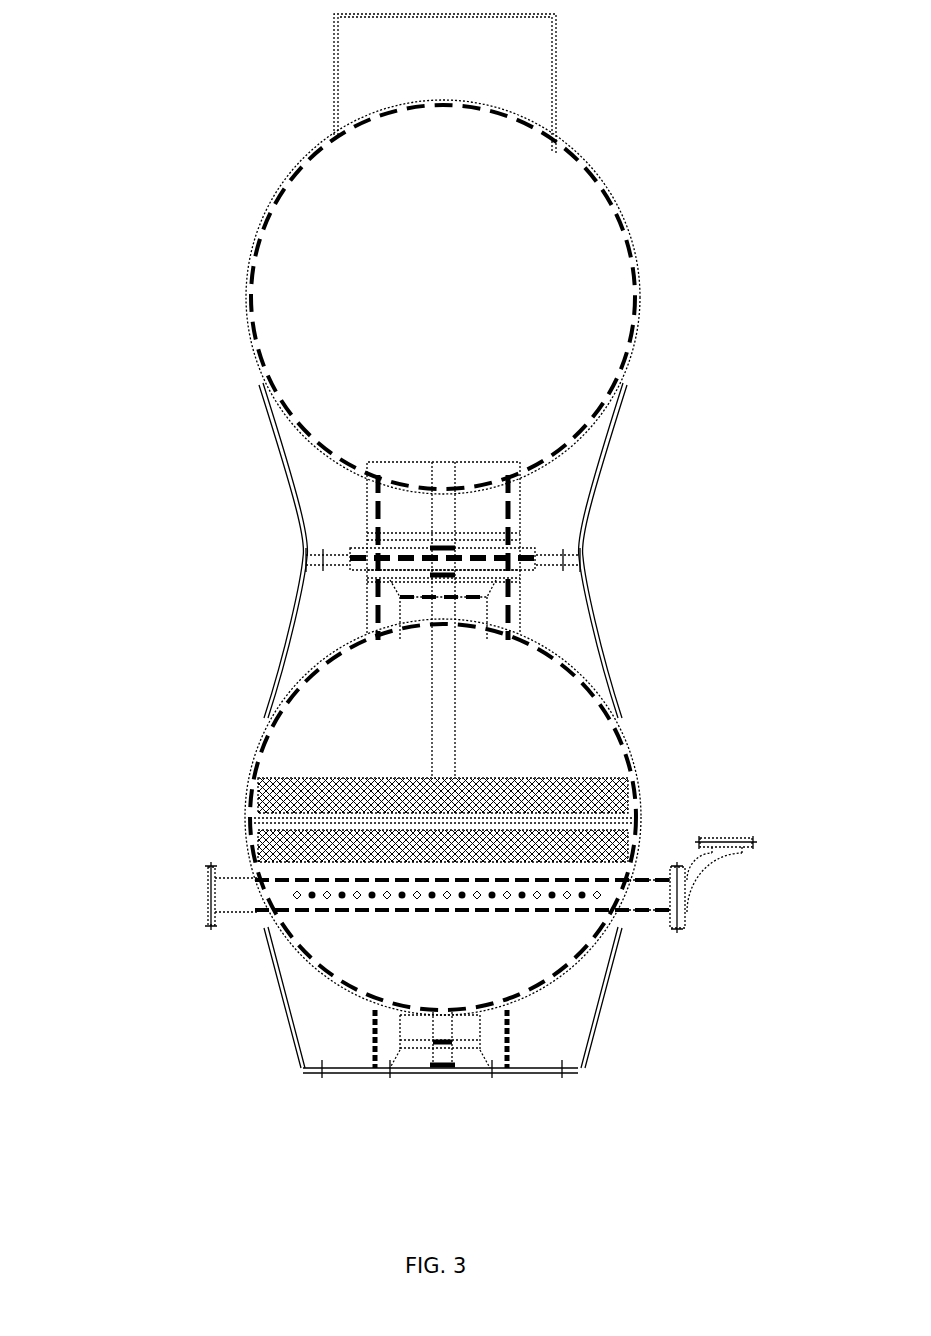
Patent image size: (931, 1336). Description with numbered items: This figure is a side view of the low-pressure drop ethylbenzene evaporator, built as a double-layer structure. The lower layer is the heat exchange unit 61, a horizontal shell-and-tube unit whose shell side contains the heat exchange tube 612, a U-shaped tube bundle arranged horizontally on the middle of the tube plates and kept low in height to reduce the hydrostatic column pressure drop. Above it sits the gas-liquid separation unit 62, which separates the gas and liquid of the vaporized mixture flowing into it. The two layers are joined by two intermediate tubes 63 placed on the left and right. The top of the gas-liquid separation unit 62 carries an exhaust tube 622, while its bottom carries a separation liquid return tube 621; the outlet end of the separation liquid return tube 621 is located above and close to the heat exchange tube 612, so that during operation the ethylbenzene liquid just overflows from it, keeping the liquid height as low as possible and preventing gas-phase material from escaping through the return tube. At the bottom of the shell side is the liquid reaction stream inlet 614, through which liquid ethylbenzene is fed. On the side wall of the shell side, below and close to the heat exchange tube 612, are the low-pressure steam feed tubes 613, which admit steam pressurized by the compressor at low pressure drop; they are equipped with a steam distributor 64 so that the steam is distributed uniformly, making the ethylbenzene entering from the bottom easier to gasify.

The heat exchange unit 61 is at (572, 745).
The gas-liquid separation unit 62 is at (695, 187).
The intermediate tube 63 is at (363, 512).
The steam distributor 64 is at (405, 908).
The heat exchange tube 612 is at (640, 820).
The low-pressure steam feed tube 613 is at (207, 867).
The liquid reaction stream inlet 614 is at (477, 1052).
The separation liquid return tube 621 is at (430, 690).
The exhaust tube 622 is at (627, 36).